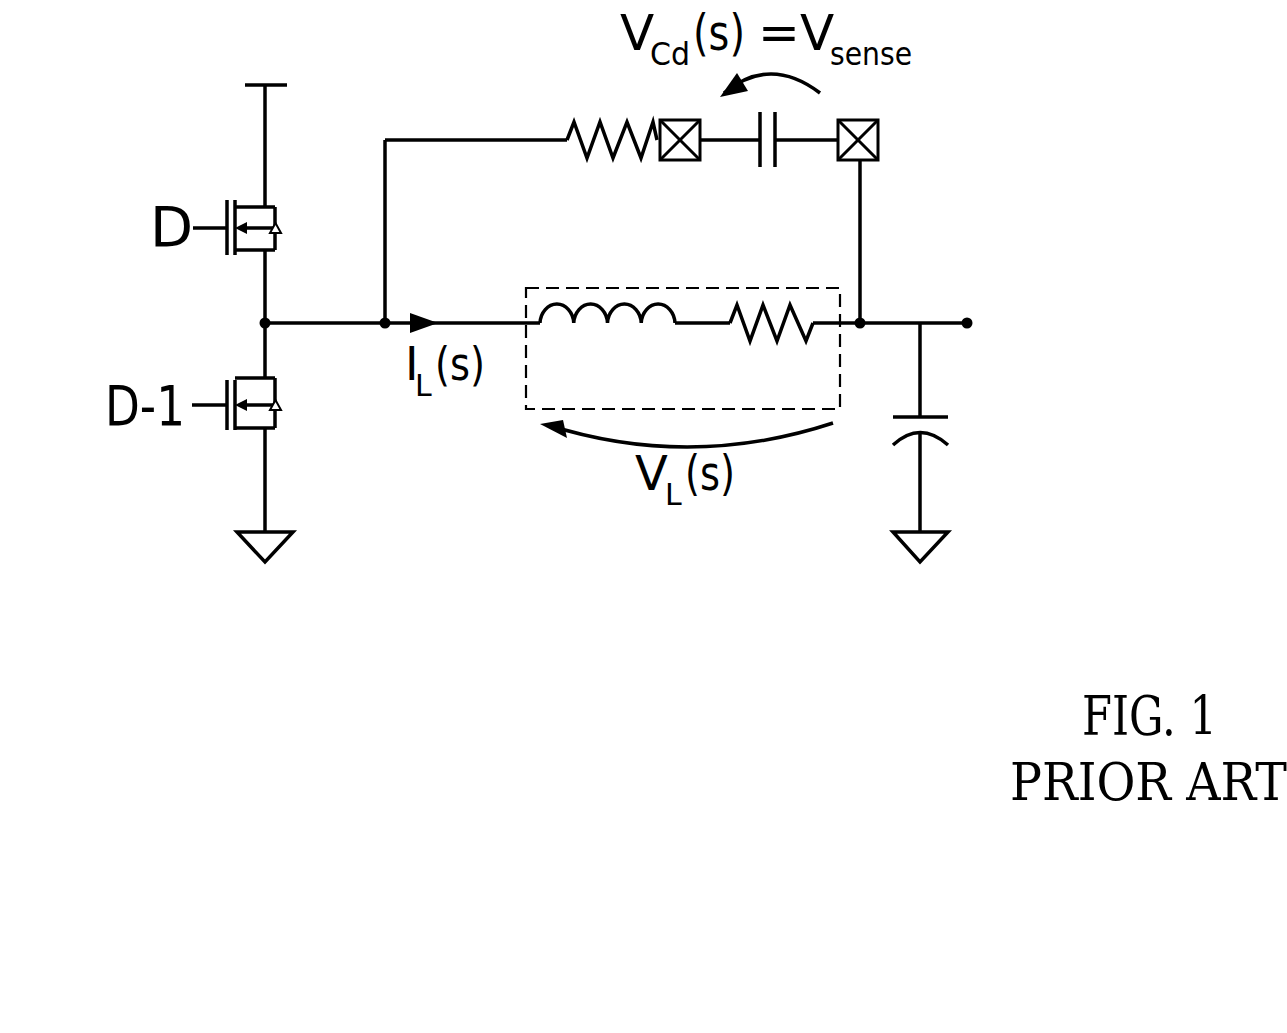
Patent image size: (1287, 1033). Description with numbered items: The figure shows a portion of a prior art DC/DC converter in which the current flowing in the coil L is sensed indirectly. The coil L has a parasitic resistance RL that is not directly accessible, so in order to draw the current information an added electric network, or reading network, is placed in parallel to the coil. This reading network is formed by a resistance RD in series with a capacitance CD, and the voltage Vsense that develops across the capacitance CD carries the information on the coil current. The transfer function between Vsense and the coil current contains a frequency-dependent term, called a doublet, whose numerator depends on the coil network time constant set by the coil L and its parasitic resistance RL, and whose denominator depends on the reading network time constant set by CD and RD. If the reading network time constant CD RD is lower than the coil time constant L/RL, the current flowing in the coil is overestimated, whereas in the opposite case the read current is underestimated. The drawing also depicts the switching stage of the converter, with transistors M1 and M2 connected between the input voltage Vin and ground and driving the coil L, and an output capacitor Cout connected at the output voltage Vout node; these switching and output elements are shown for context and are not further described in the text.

The high-side switch transistor M1 is at (286, 236).
The low-side switch transistor M2 is at (285, 414).
The resistance RD is at (612, 182).
The capacitance CD is at (767, 177).
The coil L is at (607, 351).
The parasitic resistance of the coil RL is at (766, 359).
The output capacitor Cout is at (972, 442).
The input voltage terminal Vin is at (264, 42).
The output voltage terminal Vout is at (1020, 331).